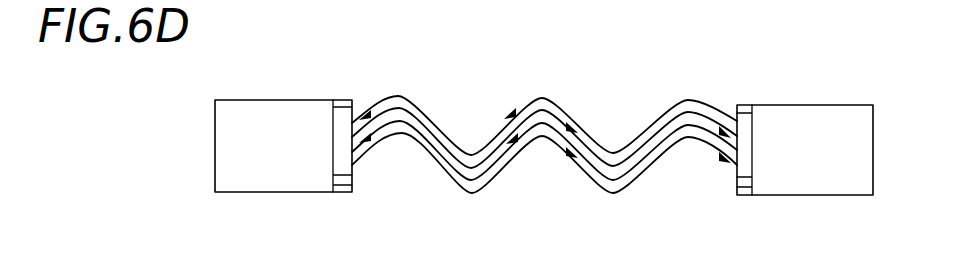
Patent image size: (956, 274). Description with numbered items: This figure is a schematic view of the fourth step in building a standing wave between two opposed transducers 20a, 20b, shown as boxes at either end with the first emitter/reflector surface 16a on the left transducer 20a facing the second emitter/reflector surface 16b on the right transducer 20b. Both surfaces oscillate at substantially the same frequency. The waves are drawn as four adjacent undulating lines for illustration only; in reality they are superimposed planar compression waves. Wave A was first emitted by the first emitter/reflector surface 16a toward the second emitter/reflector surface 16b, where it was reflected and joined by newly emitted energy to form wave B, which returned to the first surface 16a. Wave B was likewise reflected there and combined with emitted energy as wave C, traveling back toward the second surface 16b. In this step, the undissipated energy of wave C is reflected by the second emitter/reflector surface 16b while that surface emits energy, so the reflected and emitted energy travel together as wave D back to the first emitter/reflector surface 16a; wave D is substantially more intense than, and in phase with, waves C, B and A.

The first transducer 20a is at (297, 100).
The first emitter/reflector surface 16a is at (347, 193).
The second transducer 20b is at (820, 105).
The second emitter/reflector surface 16b is at (747, 196).
The wave A is at (450, 184).
The wave B is at (488, 182).
The wave C is at (521, 104).
The wave D is at (568, 98).